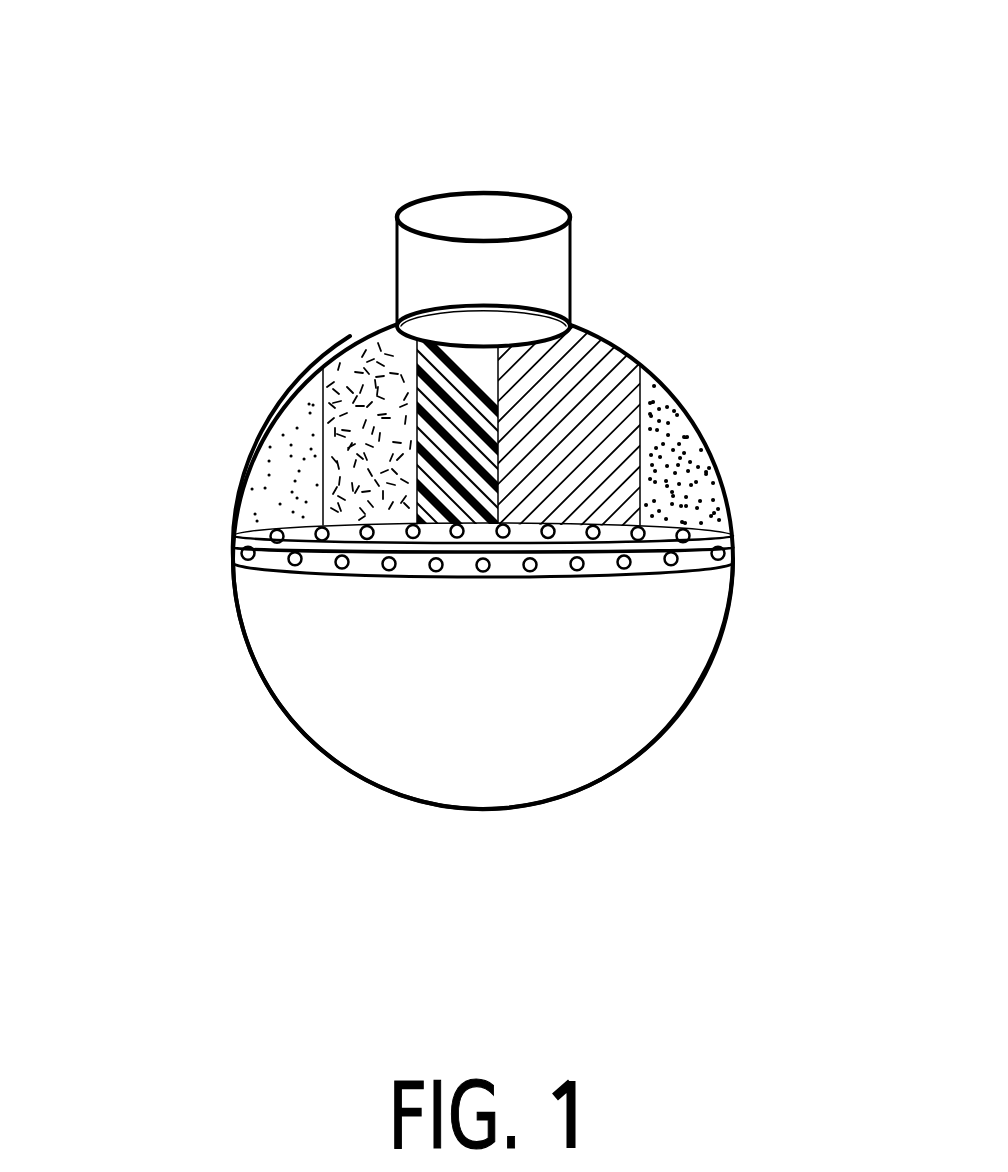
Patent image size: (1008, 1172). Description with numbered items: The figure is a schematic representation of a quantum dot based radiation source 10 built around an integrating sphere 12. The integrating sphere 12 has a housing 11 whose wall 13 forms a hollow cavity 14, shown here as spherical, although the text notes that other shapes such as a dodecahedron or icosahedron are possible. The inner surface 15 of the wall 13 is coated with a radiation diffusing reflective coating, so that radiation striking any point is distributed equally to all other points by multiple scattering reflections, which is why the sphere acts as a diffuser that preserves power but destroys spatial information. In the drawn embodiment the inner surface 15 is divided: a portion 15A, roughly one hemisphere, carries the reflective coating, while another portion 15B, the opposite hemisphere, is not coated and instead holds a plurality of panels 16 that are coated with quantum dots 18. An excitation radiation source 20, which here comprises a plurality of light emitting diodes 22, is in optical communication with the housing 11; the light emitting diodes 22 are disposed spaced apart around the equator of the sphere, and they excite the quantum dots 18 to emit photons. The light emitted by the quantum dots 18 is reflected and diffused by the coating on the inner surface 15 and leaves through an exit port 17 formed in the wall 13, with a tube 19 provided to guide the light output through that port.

The quantum dot based radiation source 10 is at (695, 42).
The housing 11 is at (680, 395).
The integrating sphere 12 is at (782, 205).
The wall 13 is at (707, 672).
The hollow cavity 14 is at (620, 732).
The inner surface 15 is at (452, 773).
The portion of inner surface 15A is at (316, 746).
The another portion of inner surface 15B is at (350, 337).
The panels 16 is at (365, 415).
The exit port 17 is at (548, 333).
The quantum dots 18 is at (618, 469).
The tube 19 is at (453, 208).
The excitation radiation source 20 is at (235, 548).
The light emitting diodes 22 is at (724, 554).